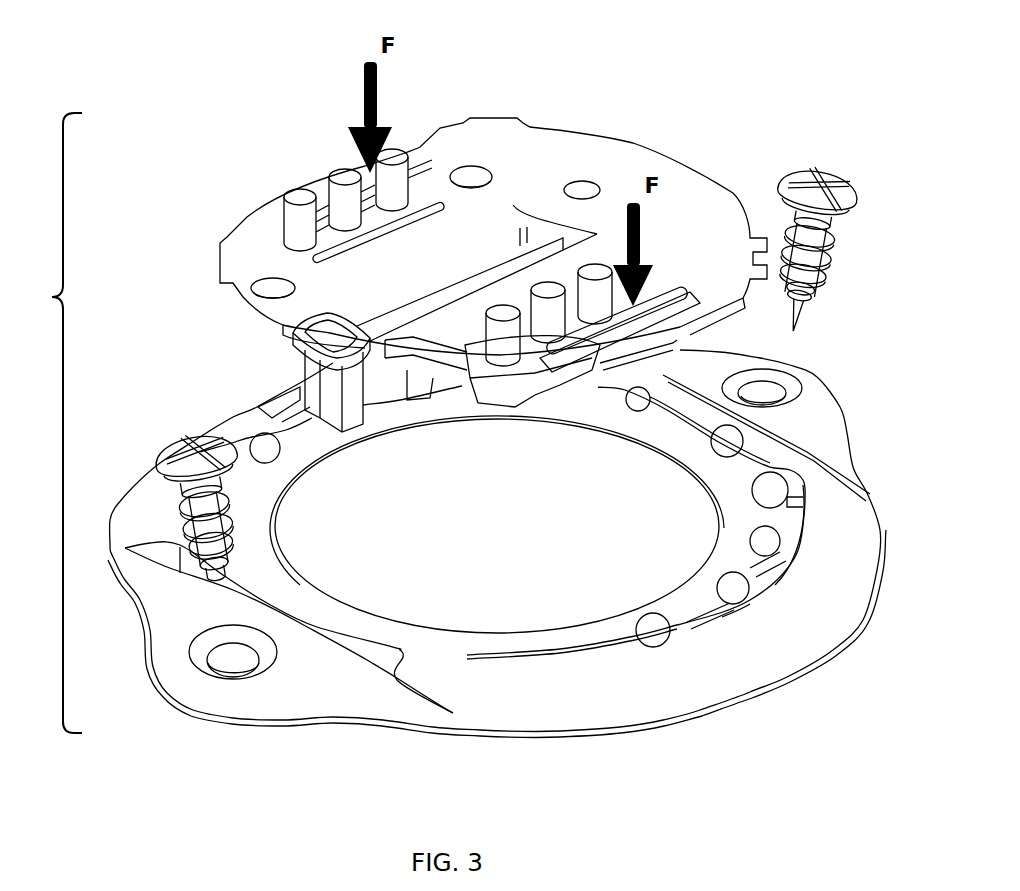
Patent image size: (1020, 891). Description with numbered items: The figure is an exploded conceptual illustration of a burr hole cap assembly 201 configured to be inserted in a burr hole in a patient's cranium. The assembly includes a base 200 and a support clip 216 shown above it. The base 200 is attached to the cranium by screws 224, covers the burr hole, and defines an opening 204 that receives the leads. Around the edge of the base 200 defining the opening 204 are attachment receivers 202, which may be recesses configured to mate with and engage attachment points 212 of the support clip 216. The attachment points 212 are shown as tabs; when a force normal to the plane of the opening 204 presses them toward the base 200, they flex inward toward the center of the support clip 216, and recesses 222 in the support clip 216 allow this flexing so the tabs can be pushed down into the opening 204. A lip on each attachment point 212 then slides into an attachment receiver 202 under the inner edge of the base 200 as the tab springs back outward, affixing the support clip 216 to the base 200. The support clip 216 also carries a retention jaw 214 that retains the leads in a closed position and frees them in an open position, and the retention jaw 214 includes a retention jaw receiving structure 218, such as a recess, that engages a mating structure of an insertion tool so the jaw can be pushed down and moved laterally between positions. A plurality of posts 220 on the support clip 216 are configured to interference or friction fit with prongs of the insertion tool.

The base 200 is at (495, 691).
The burr hole cap assembly 201 is at (42, 423).
The attachment receivers 202 is at (341, 466).
The opening 204 is at (470, 529).
The attachment points 212 is at (305, 163).
The retention jaw 214 is at (393, 393).
The support clip 216 is at (452, 246).
The retention jaw receiving structure 218 is at (330, 338).
The posts 220 is at (296, 205).
The recesses 222 is at (415, 162).
The screws 224 is at (866, 205).